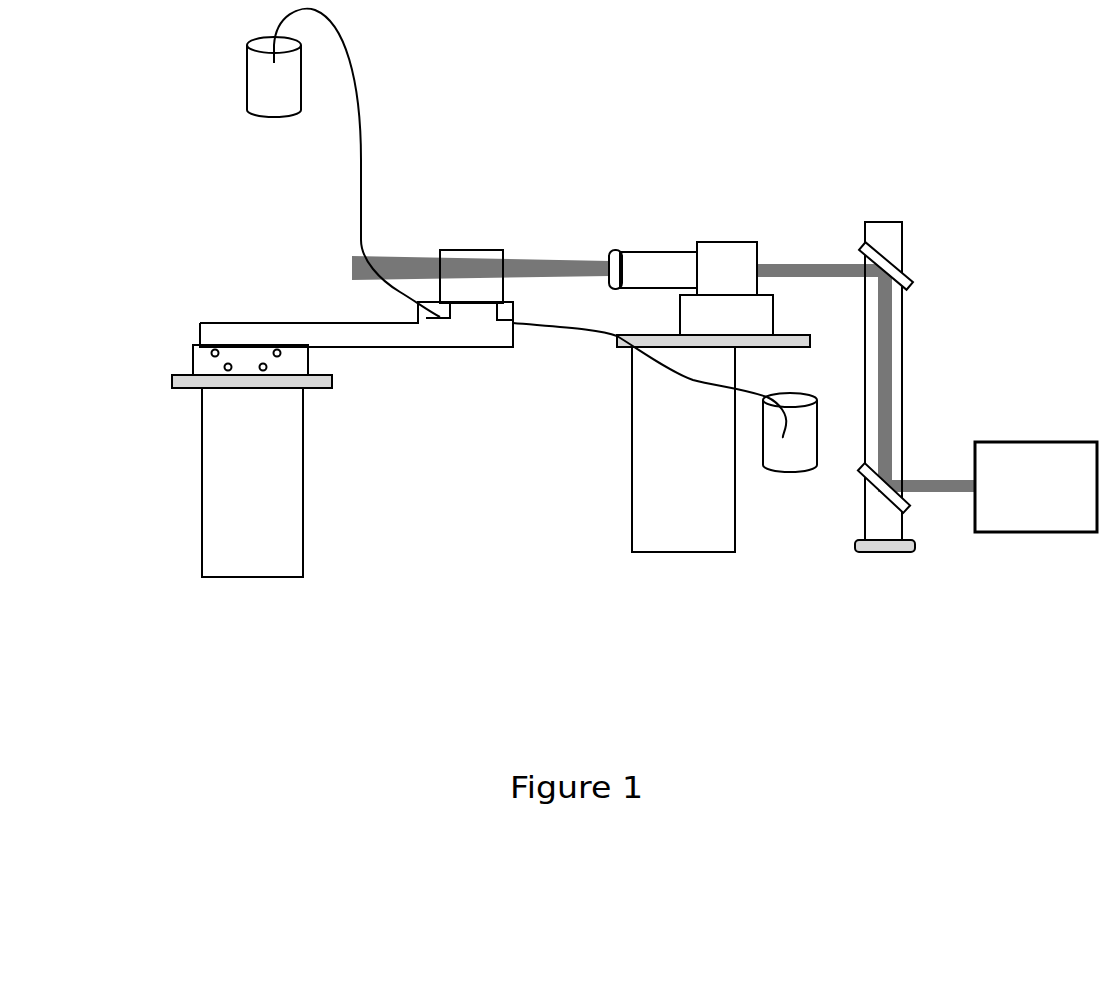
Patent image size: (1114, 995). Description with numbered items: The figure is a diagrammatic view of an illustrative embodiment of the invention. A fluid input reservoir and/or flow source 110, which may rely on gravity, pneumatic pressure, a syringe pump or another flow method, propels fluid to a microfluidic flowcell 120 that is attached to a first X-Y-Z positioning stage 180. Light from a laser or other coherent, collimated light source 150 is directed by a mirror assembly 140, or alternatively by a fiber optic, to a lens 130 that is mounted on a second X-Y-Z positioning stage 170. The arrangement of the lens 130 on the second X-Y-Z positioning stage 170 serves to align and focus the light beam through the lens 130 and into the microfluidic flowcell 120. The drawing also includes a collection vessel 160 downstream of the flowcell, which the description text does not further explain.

The fluid input reservoir and/or flow source 110 is at (342, 163).
The microfluidic flowcell 120 is at (356, 276).
The lens 130 is at (683, 250).
The mirror assembly 140 is at (884, 364).
The light source 150 is at (1036, 487).
The power supply / signal receiver 160 is at (665, 420).
The second X-Y-Z positioning stage 170 is at (726, 316).
The first X-Y-Z positioning stage 180 is at (207, 357).